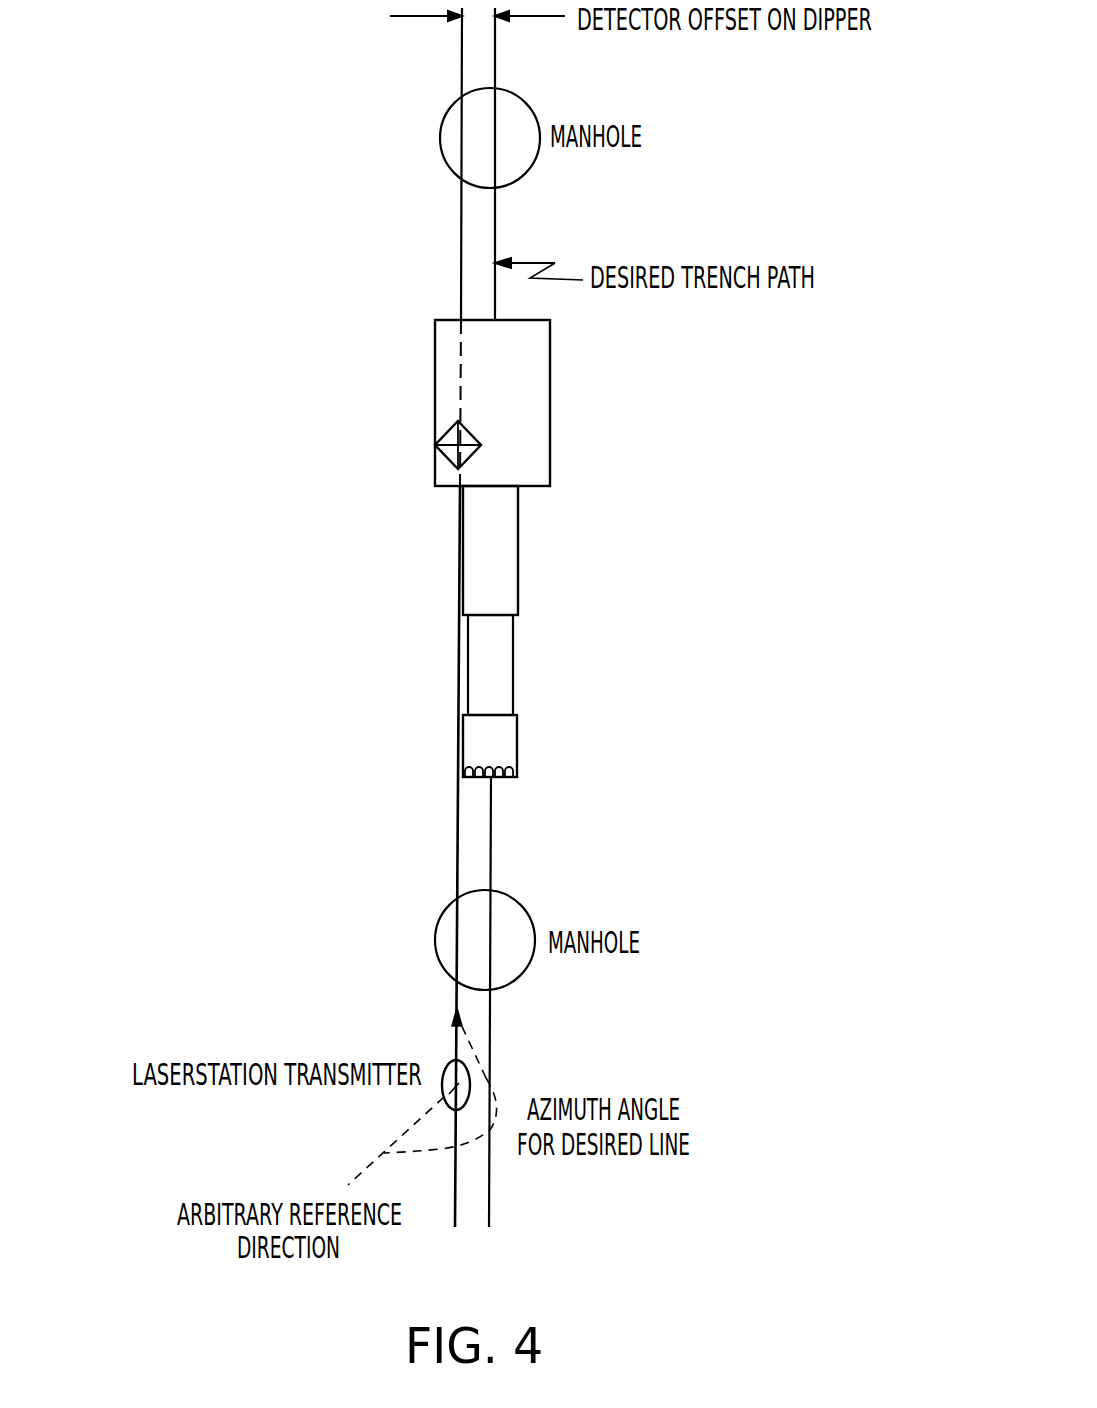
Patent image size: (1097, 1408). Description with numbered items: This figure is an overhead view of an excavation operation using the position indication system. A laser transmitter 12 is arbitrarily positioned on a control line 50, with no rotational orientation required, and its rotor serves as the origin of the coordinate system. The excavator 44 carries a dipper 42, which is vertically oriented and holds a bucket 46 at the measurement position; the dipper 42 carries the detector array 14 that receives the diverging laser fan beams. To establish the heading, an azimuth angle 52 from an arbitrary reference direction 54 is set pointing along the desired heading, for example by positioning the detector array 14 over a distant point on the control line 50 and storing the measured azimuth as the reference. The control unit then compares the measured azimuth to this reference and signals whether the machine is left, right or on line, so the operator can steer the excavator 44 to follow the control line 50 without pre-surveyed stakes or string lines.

The laser transmitter 12 is at (444, 1073).
The detector array 14 is at (451, 440).
The dipper 42 is at (505, 670).
The excavator 44 is at (550, 393).
The bucket 46 is at (505, 745).
The control line 50 is at (457, 850).
The azimuth angle 52 is at (490, 1030).
The arbitrary reference direction 54 is at (350, 1184).